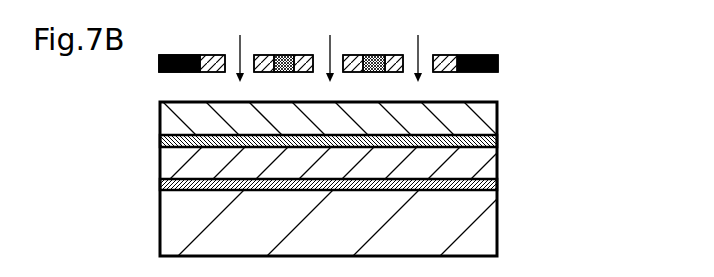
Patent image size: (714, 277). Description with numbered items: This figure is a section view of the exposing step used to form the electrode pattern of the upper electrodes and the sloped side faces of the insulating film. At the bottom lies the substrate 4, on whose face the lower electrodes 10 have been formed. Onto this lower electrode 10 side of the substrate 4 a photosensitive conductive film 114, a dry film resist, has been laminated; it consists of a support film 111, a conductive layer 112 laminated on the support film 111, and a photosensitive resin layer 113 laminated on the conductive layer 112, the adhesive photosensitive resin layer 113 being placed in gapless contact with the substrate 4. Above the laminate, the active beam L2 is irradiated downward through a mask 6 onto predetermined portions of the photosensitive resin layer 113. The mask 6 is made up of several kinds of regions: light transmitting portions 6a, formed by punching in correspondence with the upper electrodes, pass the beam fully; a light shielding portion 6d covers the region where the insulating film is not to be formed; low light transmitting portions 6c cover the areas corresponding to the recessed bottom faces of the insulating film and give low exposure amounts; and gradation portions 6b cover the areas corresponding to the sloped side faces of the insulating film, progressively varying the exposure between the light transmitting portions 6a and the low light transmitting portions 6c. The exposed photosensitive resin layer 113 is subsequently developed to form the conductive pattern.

The mask 6 is at (349, 51).
The light transmitting portion 6a is at (233, 63).
The gradation portion 6b is at (264, 55).
The low light transmitting portion 6c is at (283, 55).
The light shielding portion 6d is at (160, 68).
The active beam L2 is at (418, 47).
The support film 111 is at (468, 112).
The conductive layer 112 is at (497, 141).
The photosensitive resin layer 113 is at (468, 168).
The photosensitive conductive film 114 is at (406, 142).
The lower electrode 10 is at (497, 185).
The substrate 4 is at (468, 225).